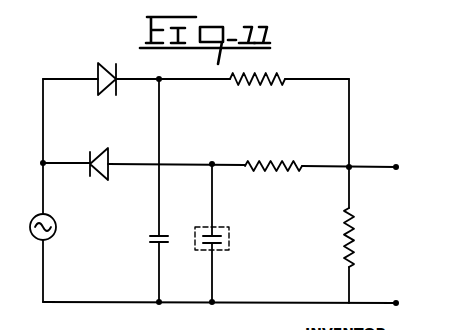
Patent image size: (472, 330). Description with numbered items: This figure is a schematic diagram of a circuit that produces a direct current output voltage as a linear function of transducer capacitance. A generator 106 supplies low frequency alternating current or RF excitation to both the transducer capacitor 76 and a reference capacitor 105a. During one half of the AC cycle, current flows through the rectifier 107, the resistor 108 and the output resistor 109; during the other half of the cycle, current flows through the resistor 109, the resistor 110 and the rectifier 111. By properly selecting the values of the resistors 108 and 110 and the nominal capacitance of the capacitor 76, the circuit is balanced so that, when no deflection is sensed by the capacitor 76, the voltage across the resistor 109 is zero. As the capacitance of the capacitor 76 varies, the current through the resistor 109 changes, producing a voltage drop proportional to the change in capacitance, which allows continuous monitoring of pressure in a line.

The rectifier 107 is at (98, 84).
The rectifier 111 is at (111, 156).
The generator 106 is at (64, 220).
The reference capacitor 105a is at (150, 245).
The transducer capacitor 76 is at (241, 229).
The resistor 108 is at (247, 86).
The resistor 110 is at (255, 161).
The output resistor 109 is at (345, 242).